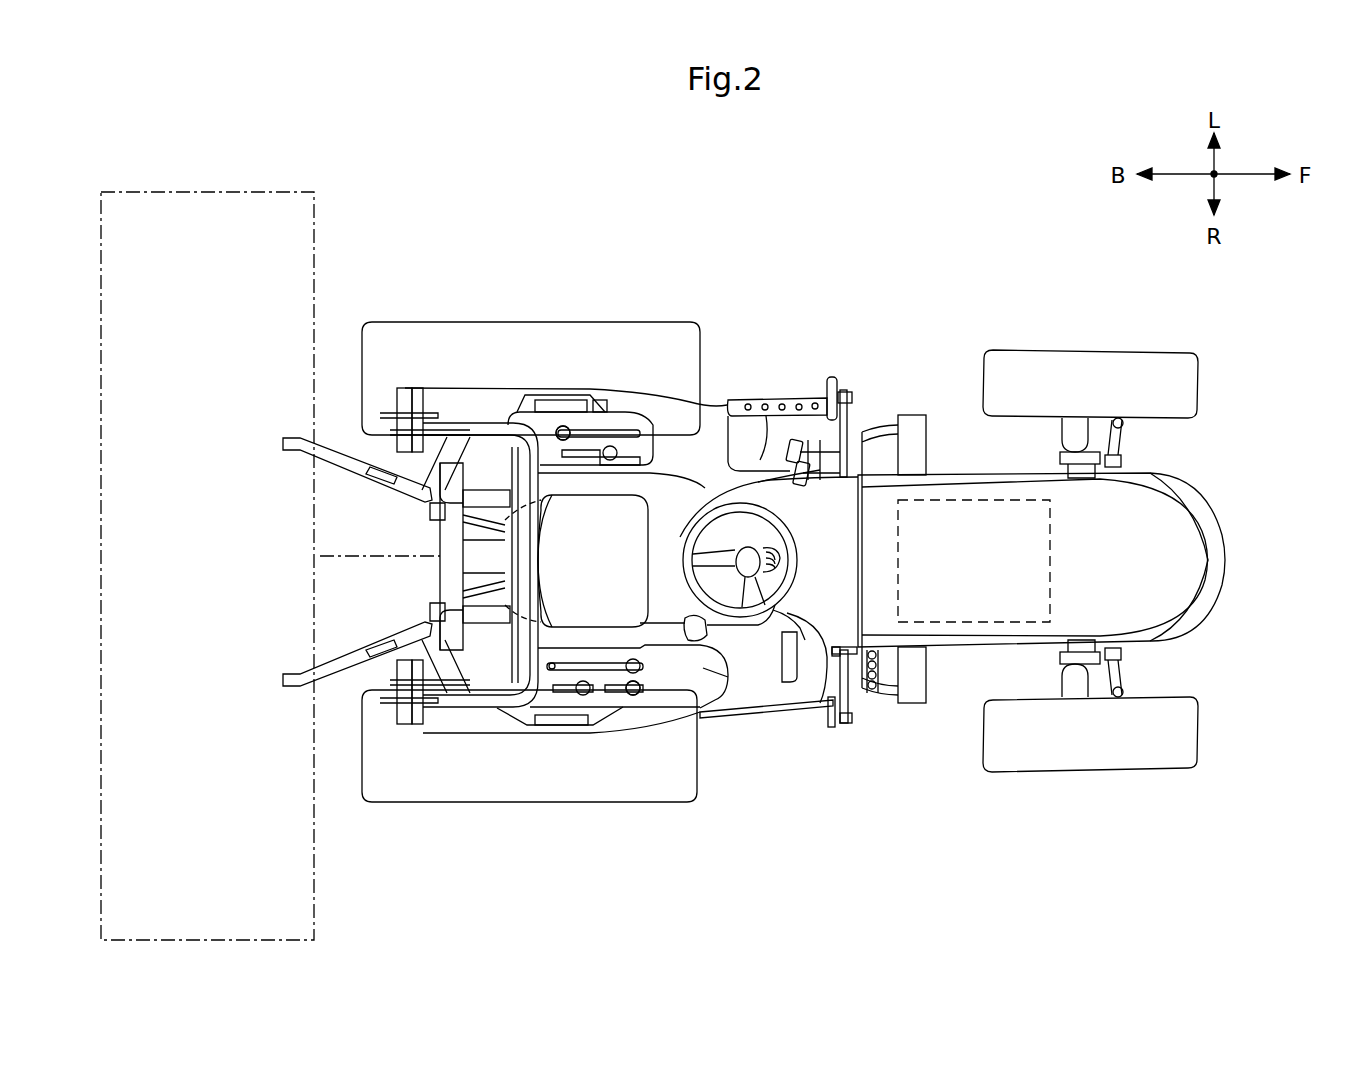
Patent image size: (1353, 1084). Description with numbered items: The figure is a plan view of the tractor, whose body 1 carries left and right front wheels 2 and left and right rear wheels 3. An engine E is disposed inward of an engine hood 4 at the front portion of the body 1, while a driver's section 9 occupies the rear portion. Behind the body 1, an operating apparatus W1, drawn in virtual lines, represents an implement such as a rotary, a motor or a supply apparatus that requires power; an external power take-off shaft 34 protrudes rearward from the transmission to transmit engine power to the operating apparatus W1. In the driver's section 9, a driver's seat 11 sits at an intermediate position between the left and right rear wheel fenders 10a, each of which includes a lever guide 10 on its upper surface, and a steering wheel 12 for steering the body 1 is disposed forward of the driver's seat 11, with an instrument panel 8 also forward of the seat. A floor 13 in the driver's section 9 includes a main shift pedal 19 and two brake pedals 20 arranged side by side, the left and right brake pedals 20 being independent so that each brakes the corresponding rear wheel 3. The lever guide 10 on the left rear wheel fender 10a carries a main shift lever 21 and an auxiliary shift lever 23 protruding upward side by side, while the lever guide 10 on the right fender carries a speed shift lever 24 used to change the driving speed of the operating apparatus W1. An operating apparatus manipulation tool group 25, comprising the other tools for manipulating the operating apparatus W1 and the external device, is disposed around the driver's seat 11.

The body 1 is at (784, 375).
The front wheels 2 is at (1125, 362).
The rear wheels 3 is at (424, 335).
The engine hood 4 is at (1190, 565).
The instrument panel 8 is at (822, 706).
The driver's section 9 is at (782, 694).
The lever guide 10 is at (550, 410).
The rear wheel fenders 10a is at (667, 396).
The driver's seat 11 is at (582, 562).
The steering wheel 12 is at (790, 532).
The floor 13 is at (752, 440).
The main shift pedal 19 is at (757, 625).
The brake pedals 20 is at (809, 432).
The main shift lever 21 is at (622, 448).
The auxiliary shift lever 23 is at (566, 425).
The speed shift lever 24 is at (633, 700).
The operating apparatus manipulation tool group 25 is at (526, 712).
The external power take-off shaft 34 is at (435, 556).
The engine E is at (978, 492).
The operating apparatus W1 is at (227, 190).